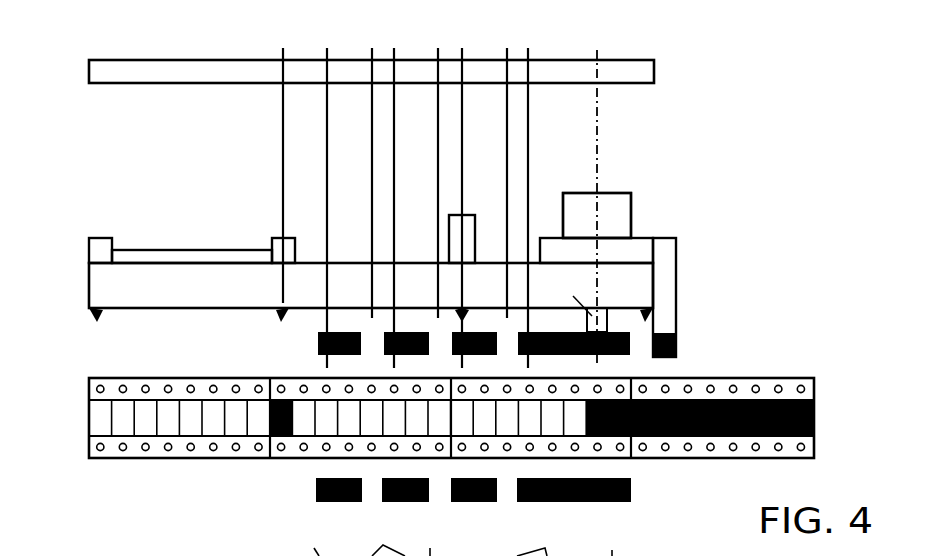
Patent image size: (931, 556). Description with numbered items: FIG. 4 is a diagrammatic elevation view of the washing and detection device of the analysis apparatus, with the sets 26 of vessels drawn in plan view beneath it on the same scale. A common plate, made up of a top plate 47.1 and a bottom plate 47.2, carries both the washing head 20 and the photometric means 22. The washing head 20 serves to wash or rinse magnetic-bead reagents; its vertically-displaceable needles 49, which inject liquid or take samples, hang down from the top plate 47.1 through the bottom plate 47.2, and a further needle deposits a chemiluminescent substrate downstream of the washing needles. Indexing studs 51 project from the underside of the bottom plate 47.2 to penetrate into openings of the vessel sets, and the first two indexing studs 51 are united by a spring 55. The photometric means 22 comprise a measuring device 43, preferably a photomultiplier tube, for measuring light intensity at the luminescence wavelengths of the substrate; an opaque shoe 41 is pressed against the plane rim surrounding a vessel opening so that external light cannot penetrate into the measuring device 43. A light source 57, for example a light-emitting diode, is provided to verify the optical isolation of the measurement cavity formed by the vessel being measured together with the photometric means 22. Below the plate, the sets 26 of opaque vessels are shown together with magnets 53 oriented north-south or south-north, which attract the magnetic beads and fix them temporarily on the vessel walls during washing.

The top plate 47.1 is at (116, 84).
The bottom plate 47.2 is at (88, 278).
The needles 49 is at (327, 50).
The washing head 20 is at (268, 182).
The spring 55 is at (172, 250).
The photometric means 22 is at (562, 191).
The photometric measuring device 43 is at (632, 206).
The light source 57 is at (678, 343).
The opaque shoe 41 is at (586, 323).
The indexing studs 51 is at (98, 314).
The magnets 53 is at (318, 340).
The sets of vessels 26 is at (177, 460).